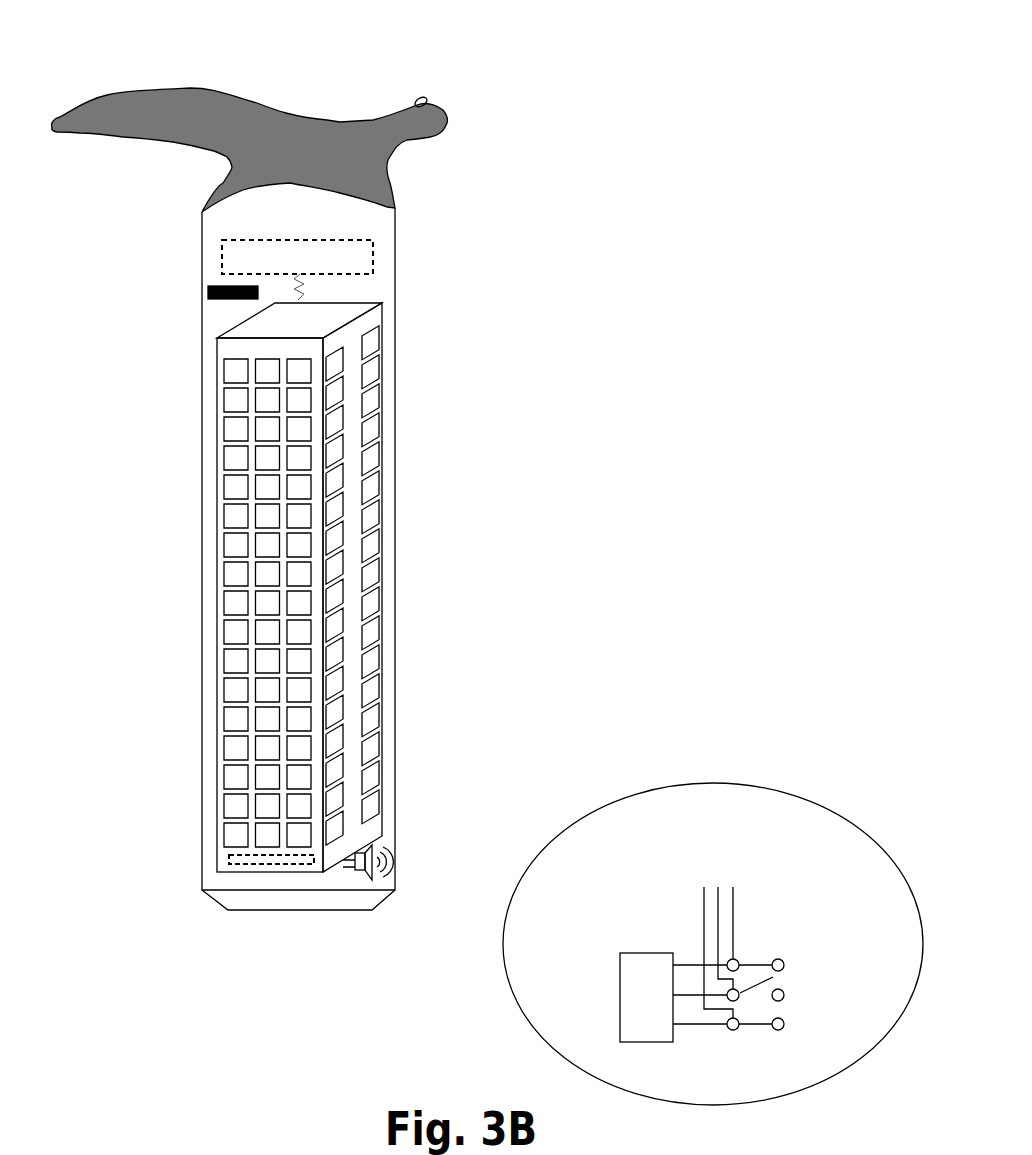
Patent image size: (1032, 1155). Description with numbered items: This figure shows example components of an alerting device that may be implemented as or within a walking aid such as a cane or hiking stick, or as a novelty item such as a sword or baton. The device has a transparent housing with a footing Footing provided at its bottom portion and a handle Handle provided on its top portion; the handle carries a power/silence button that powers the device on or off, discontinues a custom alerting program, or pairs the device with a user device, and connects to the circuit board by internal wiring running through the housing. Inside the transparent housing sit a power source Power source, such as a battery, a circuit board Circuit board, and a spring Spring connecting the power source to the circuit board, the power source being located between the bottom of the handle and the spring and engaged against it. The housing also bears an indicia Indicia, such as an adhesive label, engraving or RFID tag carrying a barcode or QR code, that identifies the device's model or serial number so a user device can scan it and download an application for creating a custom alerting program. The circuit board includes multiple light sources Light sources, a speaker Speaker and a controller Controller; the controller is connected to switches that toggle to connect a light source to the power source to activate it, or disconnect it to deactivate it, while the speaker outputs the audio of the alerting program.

The handle Handle is at (387, 162).
The footing Footing is at (228, 910).
The power source Power source is at (370, 247).
The spring Spring is at (305, 282).
The indicia Indicia is at (207, 294).
The circuit board Circuit board is at (237, 352).
The light sources Light sources is at (230, 455).
The speaker Speaker is at (323, 872).
The controller Controller is at (273, 862).